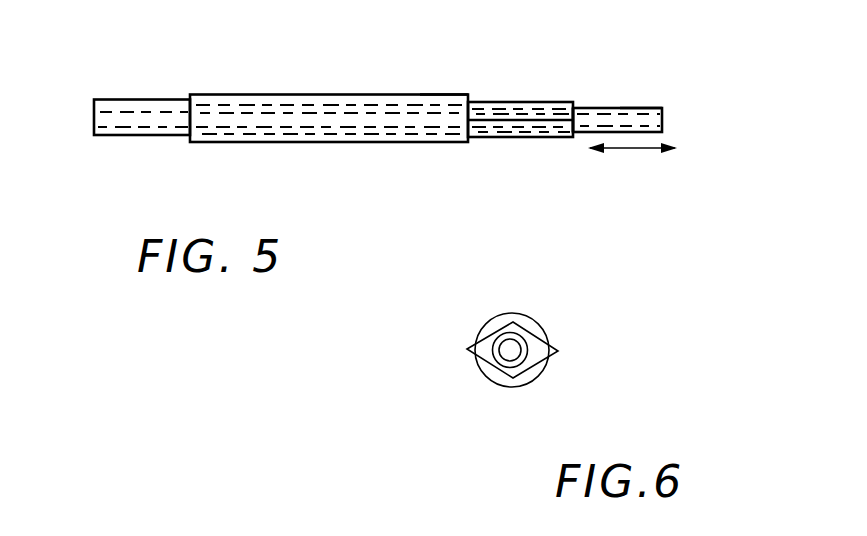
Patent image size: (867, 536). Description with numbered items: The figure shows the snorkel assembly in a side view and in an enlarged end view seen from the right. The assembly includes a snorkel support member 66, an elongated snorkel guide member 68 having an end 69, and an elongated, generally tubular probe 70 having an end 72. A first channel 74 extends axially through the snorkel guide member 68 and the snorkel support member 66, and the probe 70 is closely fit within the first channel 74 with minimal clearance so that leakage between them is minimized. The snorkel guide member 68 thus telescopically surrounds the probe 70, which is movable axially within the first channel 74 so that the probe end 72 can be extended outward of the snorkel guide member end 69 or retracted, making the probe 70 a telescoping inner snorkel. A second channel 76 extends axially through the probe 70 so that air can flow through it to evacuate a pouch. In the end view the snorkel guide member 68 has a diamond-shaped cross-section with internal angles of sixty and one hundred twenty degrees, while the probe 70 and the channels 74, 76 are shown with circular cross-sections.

In FIG. 5, the snorkel support member 66 is at (258, 146).
In FIG. 6, the snorkel support member 66 is at (537, 317).
In FIG. 5, the snorkel guide member 68 is at (527, 140).
In FIG. 6, the snorkel guide member 68 is at (492, 367).
In FIG. 5, the snorkel guide member end 69 is at (582, 108).
In FIG. 5, the probe 70 is at (613, 108).
In FIG. 6, the probe 70 is at (542, 370).
In FIG. 5, the probe end 72 is at (664, 110).
In FIG. 5, the first channel 74 is at (444, 95).
In FIG. 5, the second channel 76 is at (643, 108).
In FIG. 6, the second channel 76 is at (522, 345).